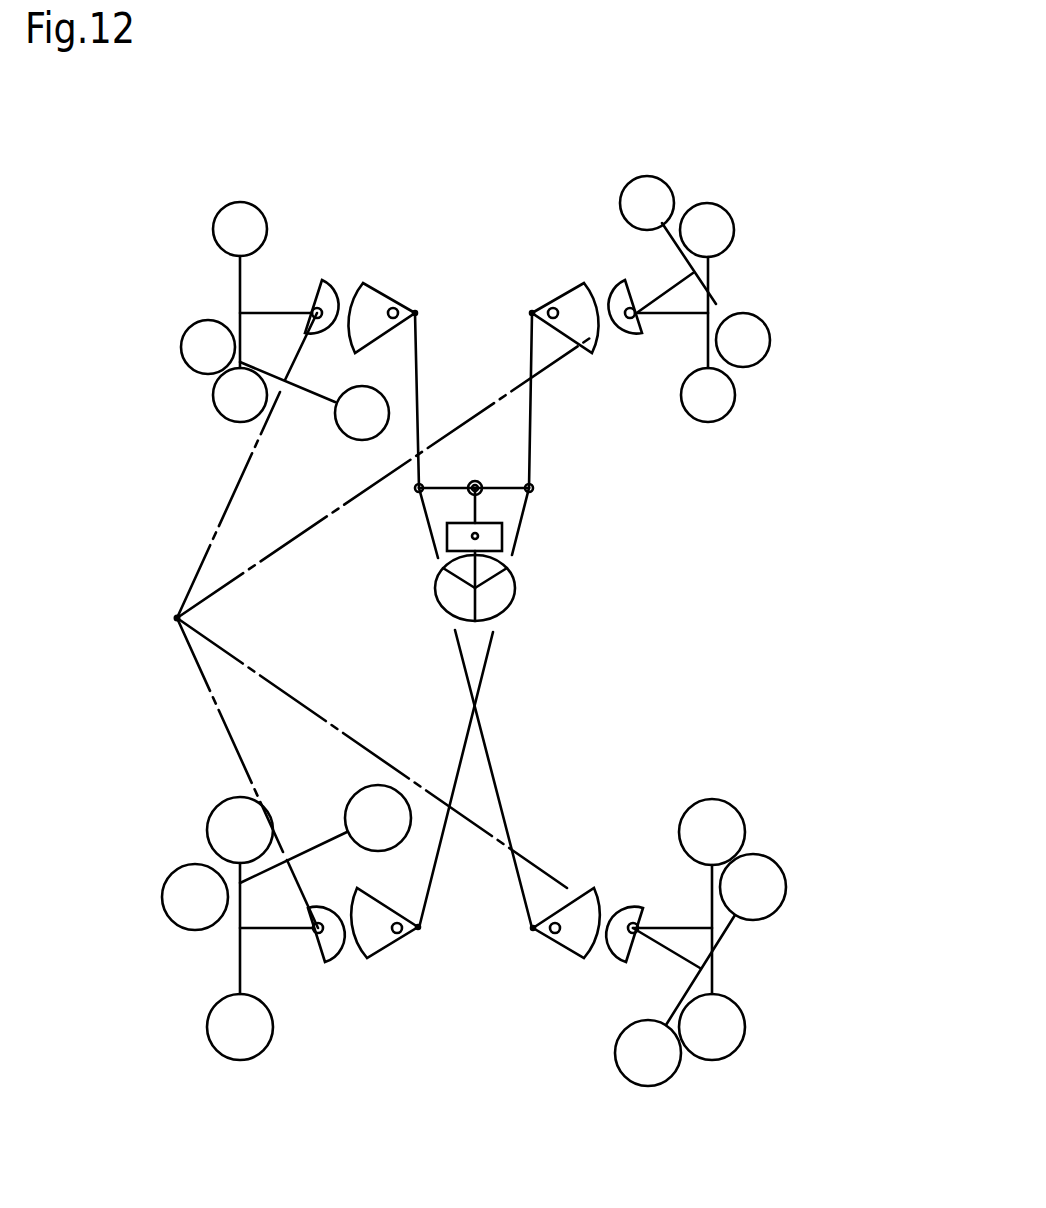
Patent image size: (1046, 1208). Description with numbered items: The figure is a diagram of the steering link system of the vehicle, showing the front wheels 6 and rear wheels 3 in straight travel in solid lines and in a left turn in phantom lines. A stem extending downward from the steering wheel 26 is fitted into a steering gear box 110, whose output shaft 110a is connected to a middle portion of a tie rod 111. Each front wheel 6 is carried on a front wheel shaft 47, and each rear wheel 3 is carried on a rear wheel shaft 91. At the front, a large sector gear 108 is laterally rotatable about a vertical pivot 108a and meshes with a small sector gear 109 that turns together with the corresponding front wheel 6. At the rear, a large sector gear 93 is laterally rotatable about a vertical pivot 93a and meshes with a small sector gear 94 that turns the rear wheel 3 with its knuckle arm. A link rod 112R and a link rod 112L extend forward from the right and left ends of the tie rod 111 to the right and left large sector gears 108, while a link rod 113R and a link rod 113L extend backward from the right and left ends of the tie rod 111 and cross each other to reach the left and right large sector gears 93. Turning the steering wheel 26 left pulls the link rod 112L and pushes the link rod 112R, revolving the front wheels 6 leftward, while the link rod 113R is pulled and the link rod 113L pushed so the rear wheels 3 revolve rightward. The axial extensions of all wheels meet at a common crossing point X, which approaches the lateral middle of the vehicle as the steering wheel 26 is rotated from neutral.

The rear wheel 3 is at (212, 807).
The front wheel 6 is at (257, 207).
The steering wheel 26 is at (435, 595).
The front wheel shaft 47 is at (272, 312).
The rear wheel shaft 91 is at (265, 927).
The large sector gear 93 is at (378, 955).
The vertical pivot 93a is at (398, 937).
The small sector gear 94 is at (318, 950).
The large sector gear 108 is at (378, 283).
The vertical pivot 108a is at (395, 307).
The small sector gear 109 is at (332, 272).
The steering gear box 110 is at (502, 537).
The output shaft 110a is at (467, 502).
The tie rod 111 is at (505, 492).
The link rod 112L is at (419, 370).
The link rod 112R is at (534, 426).
The link rod 113L is at (453, 640).
The link rod 113R is at (493, 640).
The crossing point X is at (175, 618).